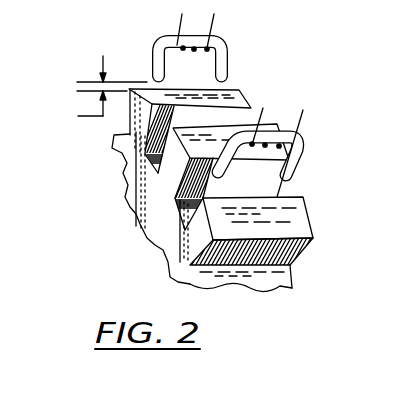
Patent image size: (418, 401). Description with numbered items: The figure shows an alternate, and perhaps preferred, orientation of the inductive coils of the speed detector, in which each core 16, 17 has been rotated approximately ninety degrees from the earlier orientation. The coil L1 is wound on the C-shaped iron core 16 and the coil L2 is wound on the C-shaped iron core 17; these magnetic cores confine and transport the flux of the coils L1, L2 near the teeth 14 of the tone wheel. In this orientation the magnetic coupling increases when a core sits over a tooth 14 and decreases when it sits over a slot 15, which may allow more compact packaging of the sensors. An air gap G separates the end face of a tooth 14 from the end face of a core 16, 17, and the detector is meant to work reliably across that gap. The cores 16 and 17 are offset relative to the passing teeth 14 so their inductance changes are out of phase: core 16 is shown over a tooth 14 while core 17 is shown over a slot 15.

The tooth 14 is at (238, 93).
The slot 15 is at (162, 130).
The iron core 16 is at (230, 53).
The iron core 17 is at (293, 166).
The coil L1 is at (218, 33).
The coil L2 is at (298, 124).
The air gap G is at (104, 90).